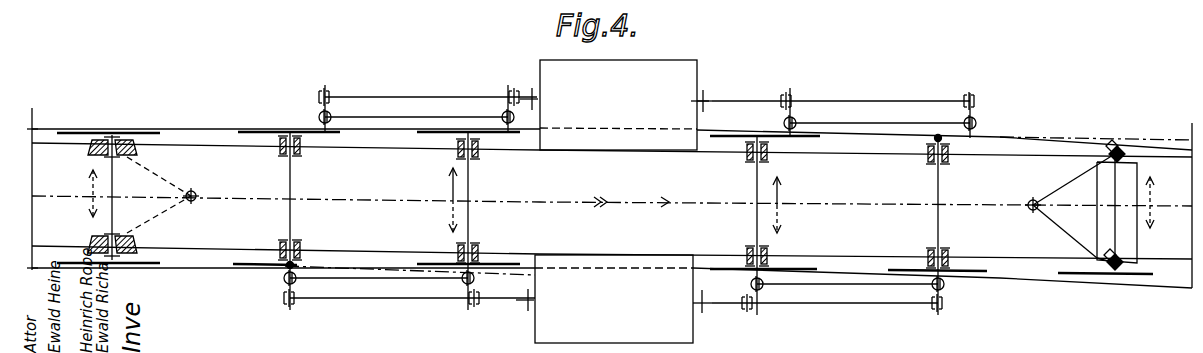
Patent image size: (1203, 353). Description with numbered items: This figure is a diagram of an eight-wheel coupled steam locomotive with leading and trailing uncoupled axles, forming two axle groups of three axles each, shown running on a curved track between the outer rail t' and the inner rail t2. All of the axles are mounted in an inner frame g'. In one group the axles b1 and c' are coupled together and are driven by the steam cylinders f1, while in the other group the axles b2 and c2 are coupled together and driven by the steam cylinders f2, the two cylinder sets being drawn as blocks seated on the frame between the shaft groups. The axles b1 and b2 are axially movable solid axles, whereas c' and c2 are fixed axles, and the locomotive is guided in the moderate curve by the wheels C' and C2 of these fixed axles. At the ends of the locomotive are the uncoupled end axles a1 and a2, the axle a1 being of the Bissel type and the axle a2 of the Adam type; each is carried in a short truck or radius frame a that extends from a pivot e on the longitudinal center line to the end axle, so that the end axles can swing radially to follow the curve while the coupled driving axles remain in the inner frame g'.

The outer rail t' is at (612, 118).
The inner rail t2 is at (858, 272).
The inner frame g' is at (612, 204).
The steam cylinders f2 is at (541, 68).
The steam cylinders f1 is at (697, 73).
The wheels C2 is at (263, 263).
The fixed axle c2 is at (290, 182).
The axially movable solid axle b2 is at (470, 192).
The axially movable solid axle b1 is at (757, 185).
The wheels C' is at (922, 187).
The fixed axle c' is at (949, 206).
The uncoupled end axle a2 is at (110, 181).
The pivot e is at (191, 196).
The truck or radius frame a is at (1075, 183).
The uncoupled end axle a1 is at (1117, 193).